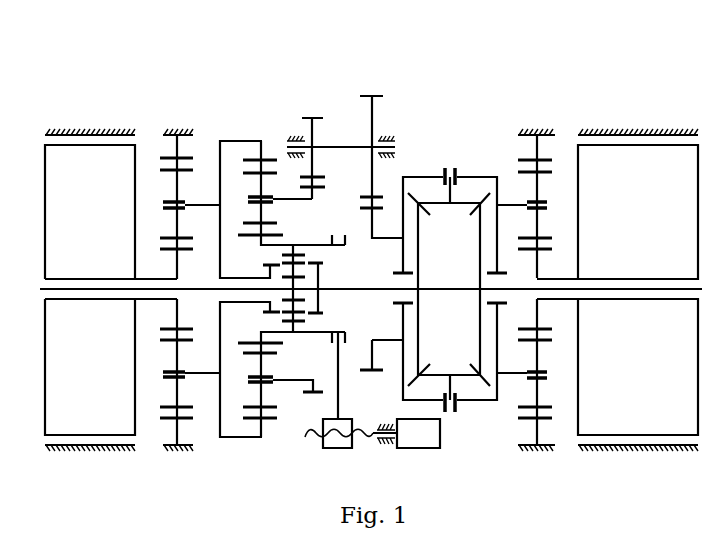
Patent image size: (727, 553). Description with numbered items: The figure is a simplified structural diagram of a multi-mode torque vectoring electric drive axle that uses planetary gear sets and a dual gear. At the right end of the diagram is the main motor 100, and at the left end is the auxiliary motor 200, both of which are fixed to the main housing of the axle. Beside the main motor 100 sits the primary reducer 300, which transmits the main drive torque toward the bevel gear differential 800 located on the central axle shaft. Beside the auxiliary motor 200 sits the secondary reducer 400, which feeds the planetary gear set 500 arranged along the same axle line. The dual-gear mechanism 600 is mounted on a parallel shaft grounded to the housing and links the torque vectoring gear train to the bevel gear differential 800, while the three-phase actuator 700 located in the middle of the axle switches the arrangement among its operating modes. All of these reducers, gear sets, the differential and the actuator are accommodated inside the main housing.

The main motor 100 is at (590, 187).
The auxiliary motor 200 is at (103, 188).
The primary reducer 300 is at (530, 187).
The secondary reducer 400 is at (171, 187).
The planetary gear set 500 is at (257, 186).
The dual-gear mechanism 600 is at (375, 145).
The three-phase actuator 700 is at (310, 255).
The bevel gear differential 800 is at (437, 188).